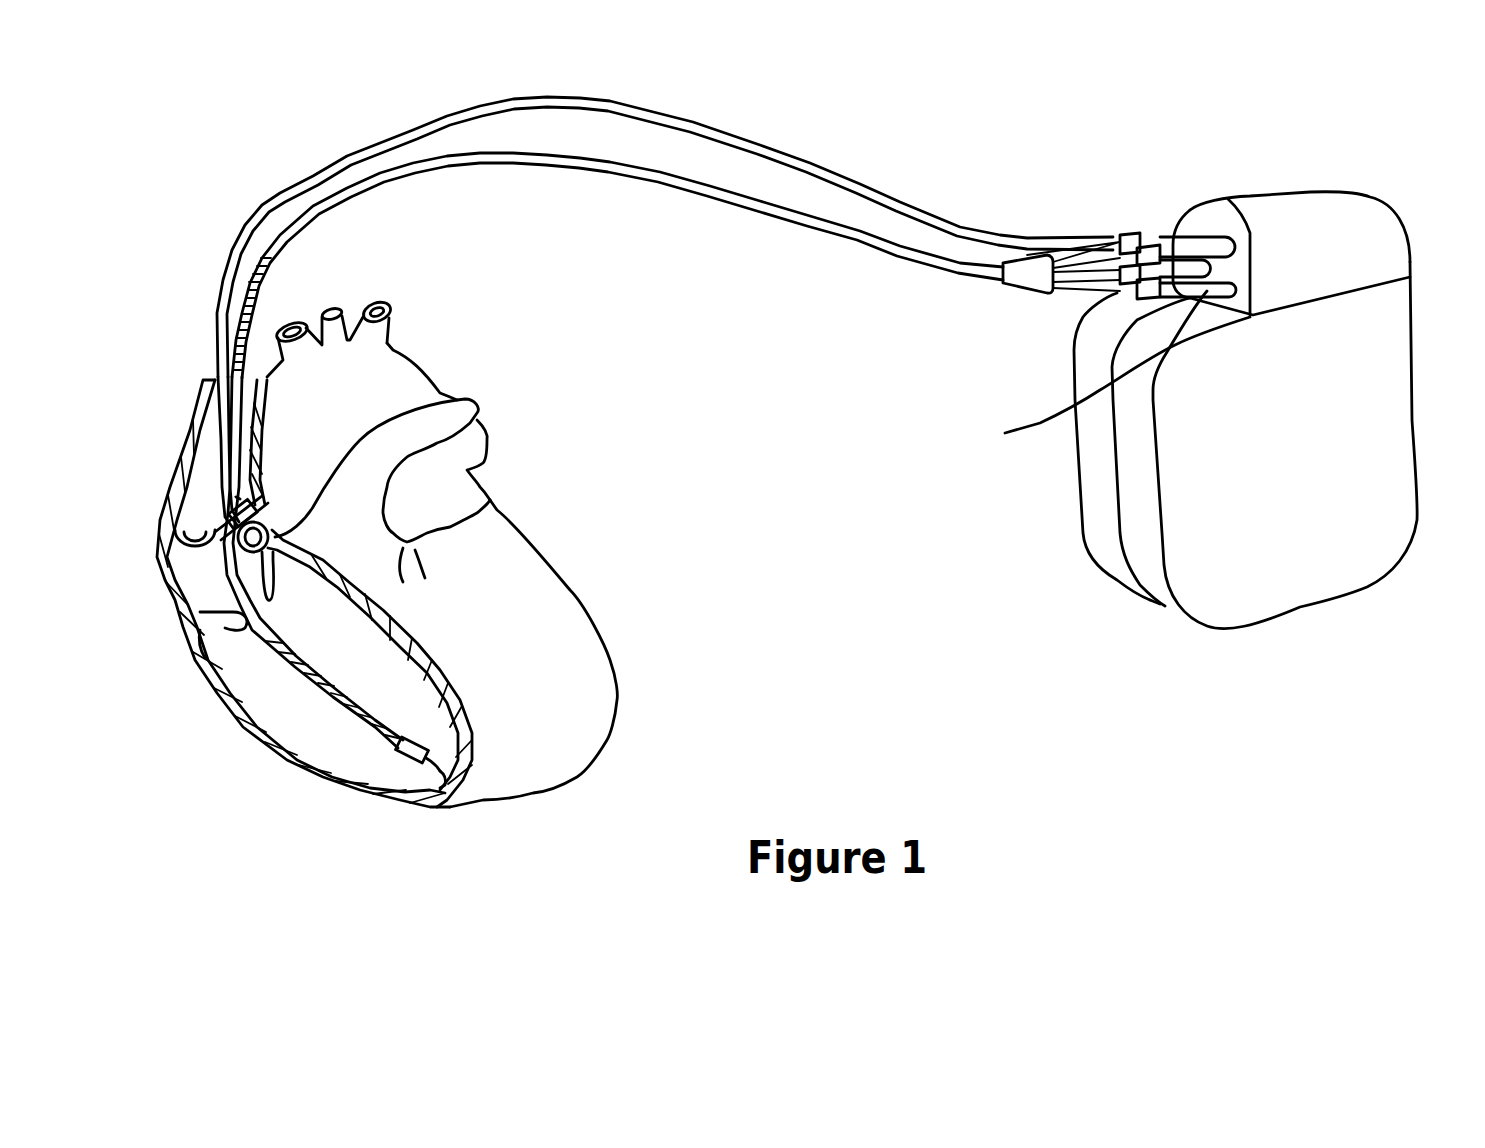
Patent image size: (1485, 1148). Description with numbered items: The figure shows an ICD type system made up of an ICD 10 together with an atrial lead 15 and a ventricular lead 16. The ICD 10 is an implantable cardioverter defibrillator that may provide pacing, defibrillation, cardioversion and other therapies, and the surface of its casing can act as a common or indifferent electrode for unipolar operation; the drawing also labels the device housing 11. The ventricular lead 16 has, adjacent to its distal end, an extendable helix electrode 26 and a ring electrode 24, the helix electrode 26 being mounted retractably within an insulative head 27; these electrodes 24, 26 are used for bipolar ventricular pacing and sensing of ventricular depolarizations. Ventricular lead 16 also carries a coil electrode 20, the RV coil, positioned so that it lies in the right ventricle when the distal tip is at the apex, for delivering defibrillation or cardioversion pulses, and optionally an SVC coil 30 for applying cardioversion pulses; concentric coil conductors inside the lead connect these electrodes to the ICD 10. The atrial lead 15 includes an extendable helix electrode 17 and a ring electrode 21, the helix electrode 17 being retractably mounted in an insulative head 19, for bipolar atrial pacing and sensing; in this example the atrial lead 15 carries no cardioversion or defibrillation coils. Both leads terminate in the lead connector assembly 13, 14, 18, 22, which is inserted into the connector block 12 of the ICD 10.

The ICD 10 is at (1428, 450).
The housing shell 11 is at (1200, 553).
The connector block 12 is at (1310, 193).
The lead connector assembly 13 is at (1160, 233).
The lead connector assembly 14 is at (1097, 302).
The atrial lead 15 is at (977, 237).
The ventricular lead 16 is at (927, 267).
The extendable helix electrode 17 is at (260, 494).
The lead connector assembly 18 is at (1195, 250).
The insulative head 19 is at (238, 498).
The coil electrode 20 is at (323, 697).
The ring electrode 21 is at (172, 543).
The lead connector assembly 22 is at (1109, 382).
The ring electrode 24 is at (390, 747).
The extendable helix electrode 26 is at (440, 771).
The insulative head 27 is at (420, 760).
The SVC coil 30 is at (257, 298).